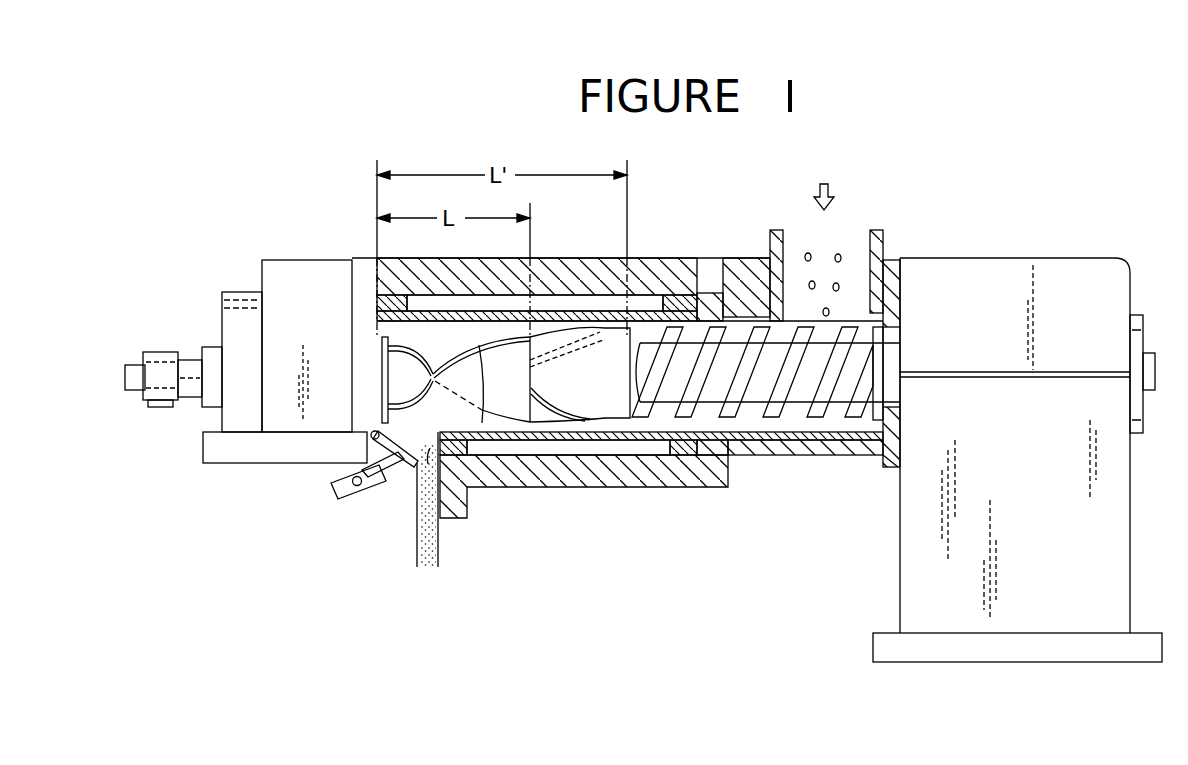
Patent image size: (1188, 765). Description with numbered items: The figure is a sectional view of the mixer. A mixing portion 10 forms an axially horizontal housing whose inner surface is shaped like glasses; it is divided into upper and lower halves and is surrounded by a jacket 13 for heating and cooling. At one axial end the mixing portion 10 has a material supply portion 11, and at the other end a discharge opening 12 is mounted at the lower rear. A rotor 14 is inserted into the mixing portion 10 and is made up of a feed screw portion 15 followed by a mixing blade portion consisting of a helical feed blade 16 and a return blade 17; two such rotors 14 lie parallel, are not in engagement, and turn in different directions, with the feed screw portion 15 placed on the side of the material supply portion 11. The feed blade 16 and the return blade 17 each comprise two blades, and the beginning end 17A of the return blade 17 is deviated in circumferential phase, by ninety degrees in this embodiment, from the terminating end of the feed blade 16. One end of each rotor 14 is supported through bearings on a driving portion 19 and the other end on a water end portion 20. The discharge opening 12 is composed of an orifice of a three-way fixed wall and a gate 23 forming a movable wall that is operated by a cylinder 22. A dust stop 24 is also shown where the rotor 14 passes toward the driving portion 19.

The mixing portion 10 is at (545, 448).
The material supply portion 11 is at (845, 246).
The discharge opening 12 is at (430, 453).
The jacket 13 is at (427, 300).
The rotor 14 is at (653, 412).
The feed screw portion 15 is at (788, 420).
The helical feed blade 16 is at (570, 421).
The return blade 17 is at (482, 423).
The beginning end of the return blade 17A is at (530, 337).
The driving portion 19 is at (1052, 275).
The water end portion 20 is at (303, 280).
The cylinder 22 is at (331, 490).
The gate 23 is at (378, 477).
The dust stop 24 is at (895, 325).